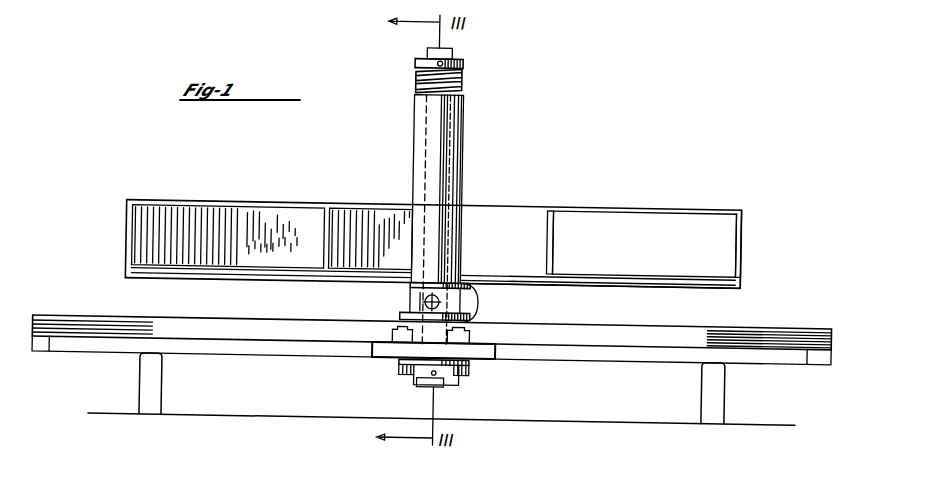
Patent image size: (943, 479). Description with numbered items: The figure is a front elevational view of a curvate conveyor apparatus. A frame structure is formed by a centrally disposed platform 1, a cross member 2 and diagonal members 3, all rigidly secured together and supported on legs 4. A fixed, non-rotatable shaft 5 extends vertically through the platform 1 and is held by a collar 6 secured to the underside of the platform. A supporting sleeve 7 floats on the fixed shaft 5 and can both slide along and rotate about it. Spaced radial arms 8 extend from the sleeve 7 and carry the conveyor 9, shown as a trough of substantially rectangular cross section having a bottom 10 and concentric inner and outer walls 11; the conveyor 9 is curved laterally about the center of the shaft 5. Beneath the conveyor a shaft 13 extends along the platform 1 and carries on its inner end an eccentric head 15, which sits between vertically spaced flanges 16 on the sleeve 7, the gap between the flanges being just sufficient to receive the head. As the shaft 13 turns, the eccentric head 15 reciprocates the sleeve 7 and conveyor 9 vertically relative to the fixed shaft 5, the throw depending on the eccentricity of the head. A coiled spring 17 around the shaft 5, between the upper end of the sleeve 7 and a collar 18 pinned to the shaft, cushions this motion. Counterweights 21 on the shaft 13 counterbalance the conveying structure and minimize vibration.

The platform 1 is at (483, 352).
The cross member 2 is at (592, 338).
The diagonal members 3 is at (816, 352).
The legs 4 is at (152, 386).
The fixed shaft 5 is at (450, 54).
The collar 6 is at (418, 372).
The supporting sleeve 7 is at (458, 152).
The radial arms 8 is at (500, 270).
The conveyor 9 is at (657, 206).
The bottom 10 is at (632, 273).
The inner and outer walls 11 is at (553, 240).
The shaft 13 is at (440, 301).
The eccentric head 15 is at (418, 300).
The flanges 16 is at (405, 316).
The coiled spring 17 is at (460, 86).
The collar 18 is at (418, 62).
The counterweights 21 is at (470, 308).